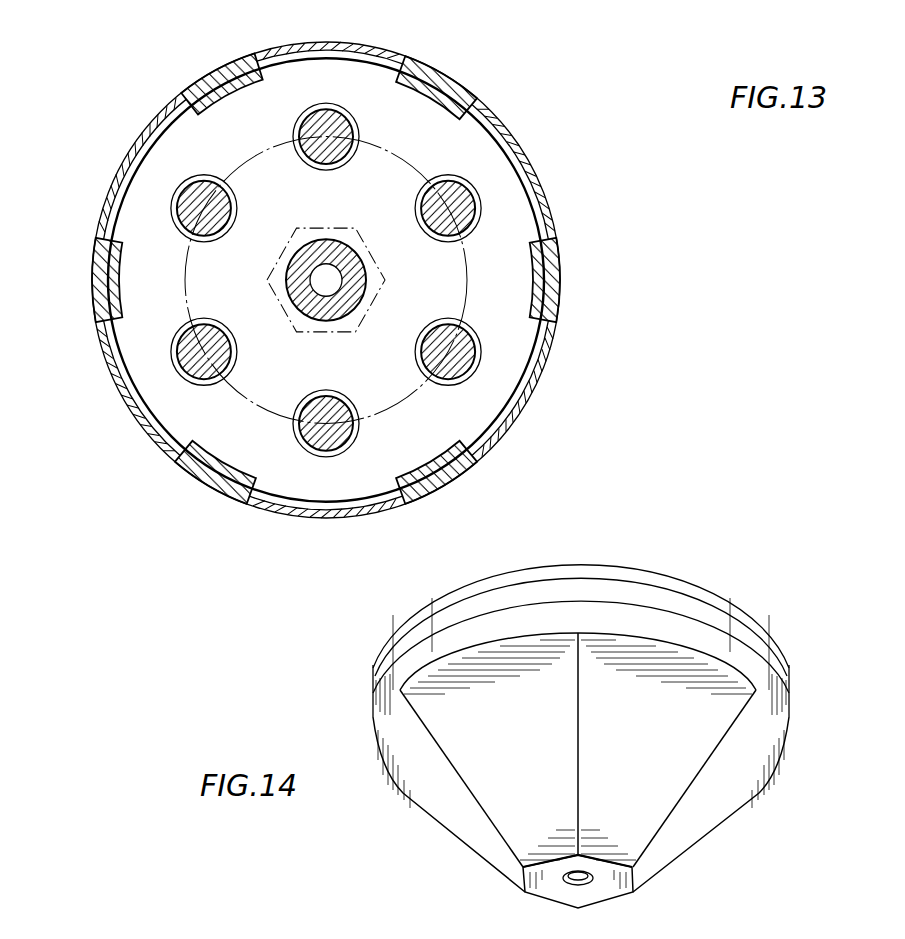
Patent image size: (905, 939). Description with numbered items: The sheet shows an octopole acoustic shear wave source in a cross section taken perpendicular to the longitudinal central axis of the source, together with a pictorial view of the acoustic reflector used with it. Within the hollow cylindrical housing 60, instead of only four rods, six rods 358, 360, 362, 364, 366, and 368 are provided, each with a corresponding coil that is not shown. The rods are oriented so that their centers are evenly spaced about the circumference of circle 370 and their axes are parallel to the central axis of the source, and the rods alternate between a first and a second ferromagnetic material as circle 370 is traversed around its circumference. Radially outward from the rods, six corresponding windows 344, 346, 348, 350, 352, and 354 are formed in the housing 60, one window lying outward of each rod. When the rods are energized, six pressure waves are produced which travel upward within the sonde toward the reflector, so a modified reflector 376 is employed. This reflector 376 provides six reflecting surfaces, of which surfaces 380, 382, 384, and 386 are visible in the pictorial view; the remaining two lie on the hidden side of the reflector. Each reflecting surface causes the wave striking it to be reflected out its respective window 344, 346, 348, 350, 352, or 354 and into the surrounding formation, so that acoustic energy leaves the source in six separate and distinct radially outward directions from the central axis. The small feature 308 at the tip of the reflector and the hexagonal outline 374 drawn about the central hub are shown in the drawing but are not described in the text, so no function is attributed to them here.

In FIG. 13, the hollow cylindrical housing 60 is at (222, 78).
In FIG. 14, the threaded hole 308 is at (578, 890).
In FIG. 13, the window 344 is at (153, 435).
In FIG. 13, the window 346 is at (339, 518).
In FIG. 13, the window 348 is at (516, 400).
In FIG. 13, the window 350 is at (537, 175).
In FIG. 13, the window 352 is at (332, 43).
In FIG. 13, the window 354 is at (108, 186).
In FIG. 13, the rod 358 is at (181, 362).
In FIG. 13, the rod 360 is at (316, 445).
In FIG. 13, the rod 362 is at (458, 372).
In FIG. 13, the rod 364 is at (450, 209).
In FIG. 13, the rod 366 is at (338, 132).
In FIG. 13, the rod 368 is at (194, 195).
In FIG. 13, the circle 370 is at (422, 166).
In FIG. 13, the hexagonal nut outline 374 is at (327, 240).
In FIG. 13, the modified reflector 376 is at (378, 272).
In FIG. 14, the modified reflector 376 is at (694, 592).
In FIG. 14, the reflecting surface 380 is at (443, 812).
In FIG. 14, the reflecting surface 382 is at (524, 730).
In FIG. 14, the reflecting surface 384 is at (687, 730).
In FIG. 14, the reflecting surface 386 is at (722, 813).